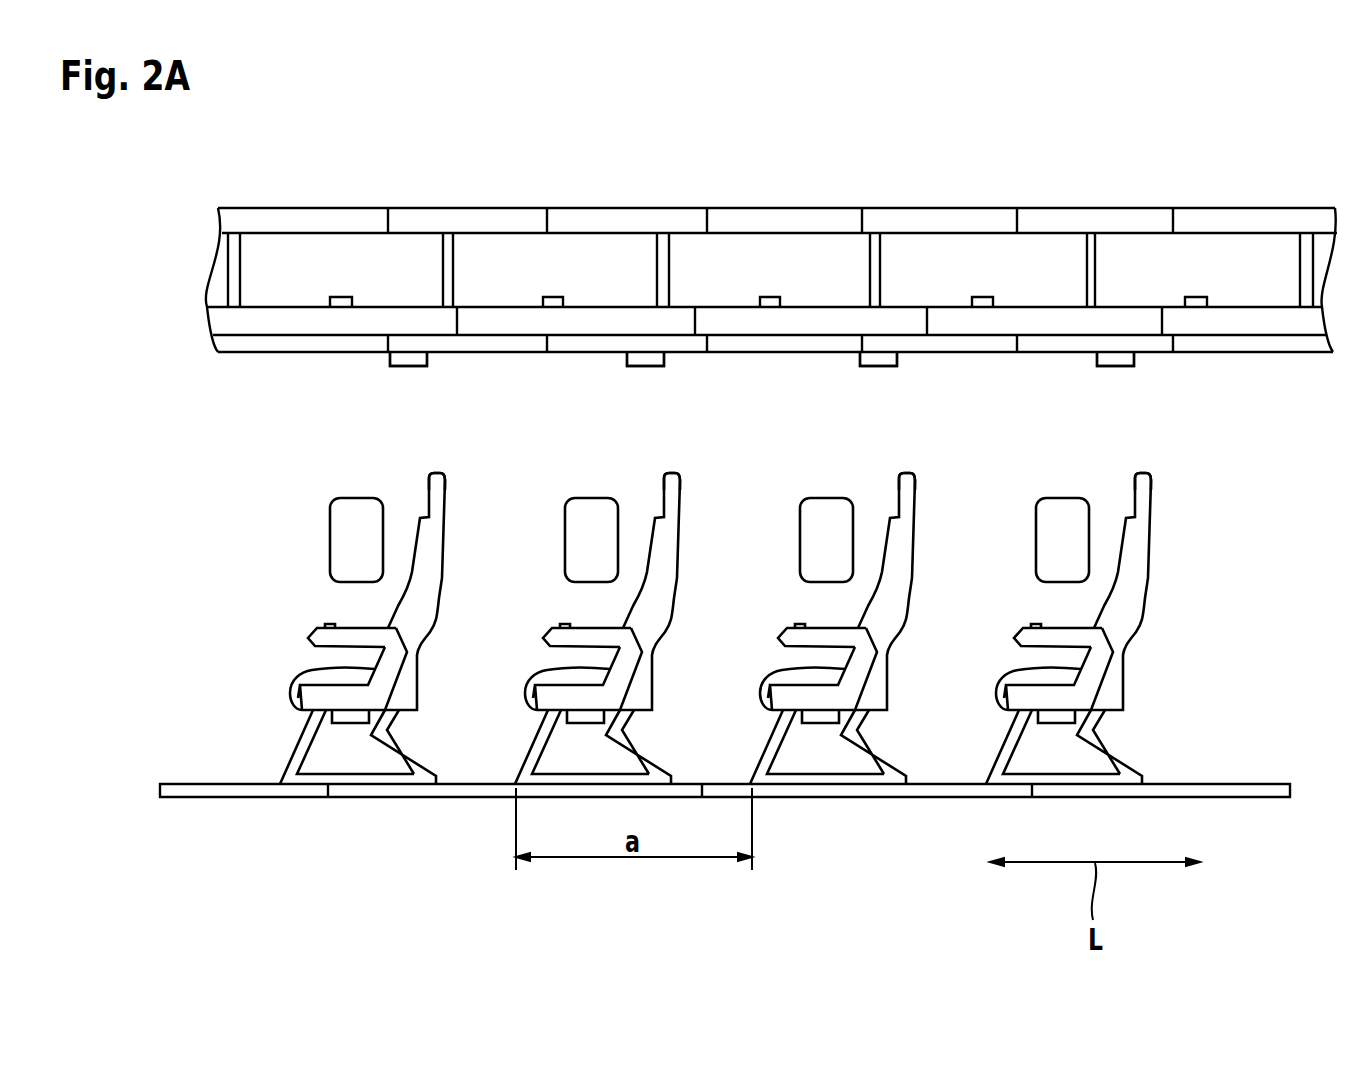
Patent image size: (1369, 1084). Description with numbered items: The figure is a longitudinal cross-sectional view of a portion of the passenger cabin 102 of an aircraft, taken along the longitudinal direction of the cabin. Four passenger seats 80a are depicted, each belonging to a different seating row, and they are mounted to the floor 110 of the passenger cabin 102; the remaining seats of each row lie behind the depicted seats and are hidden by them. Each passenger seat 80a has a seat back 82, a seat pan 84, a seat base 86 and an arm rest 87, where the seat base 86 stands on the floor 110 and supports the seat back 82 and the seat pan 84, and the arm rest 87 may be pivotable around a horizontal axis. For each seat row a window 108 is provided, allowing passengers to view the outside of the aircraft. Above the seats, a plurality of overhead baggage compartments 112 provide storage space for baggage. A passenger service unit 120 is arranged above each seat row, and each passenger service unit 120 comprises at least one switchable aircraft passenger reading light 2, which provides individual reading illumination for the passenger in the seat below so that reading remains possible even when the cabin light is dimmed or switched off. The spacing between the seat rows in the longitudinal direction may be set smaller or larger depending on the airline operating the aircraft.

The aircraft passenger reading light 2 is at (383, 363).
The passenger seat 80a is at (442, 451).
The seat back 82 is at (427, 588).
The seat pan 84 is at (303, 680).
The seat base 86 is at (403, 753).
The arm rest 87 is at (358, 640).
The passenger cabin 102 is at (665, 576).
The window 108 is at (340, 524).
The floor 110 is at (1237, 783).
The overhead baggage compartment 112 is at (373, 257).
The passenger service unit 120 is at (399, 388).